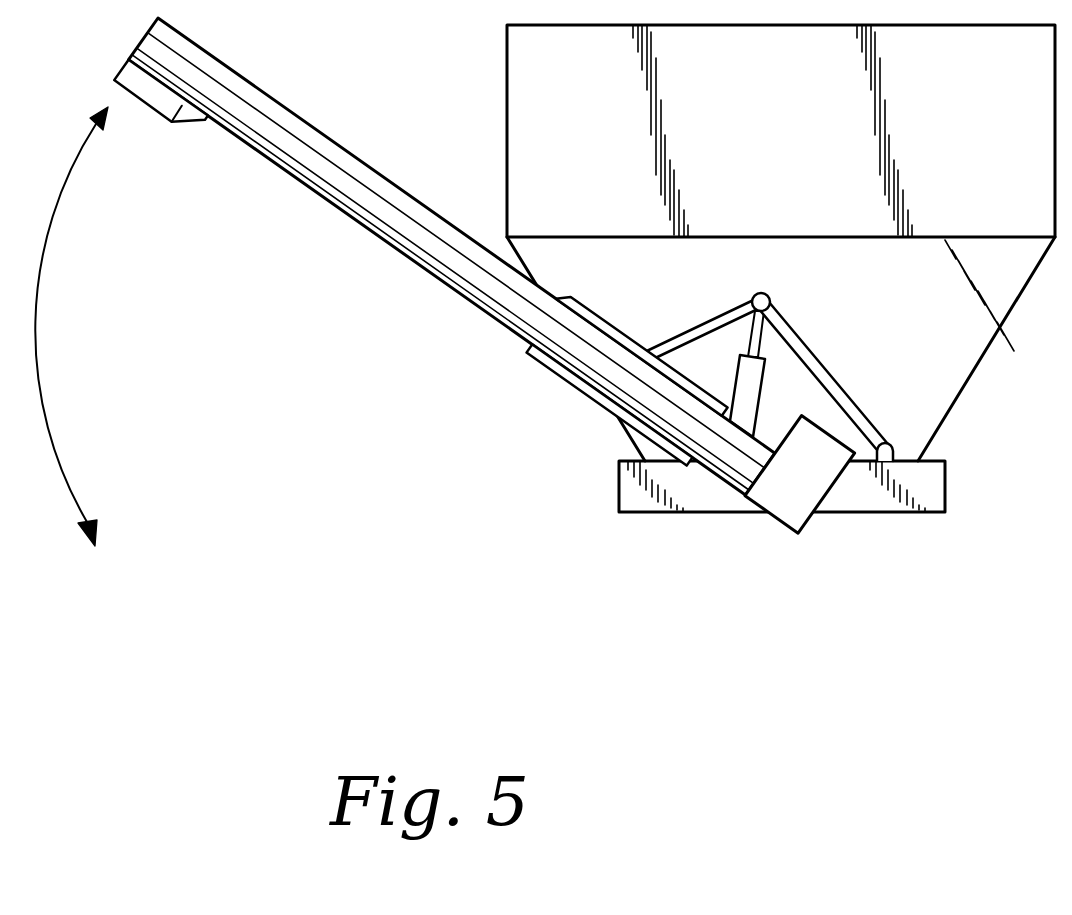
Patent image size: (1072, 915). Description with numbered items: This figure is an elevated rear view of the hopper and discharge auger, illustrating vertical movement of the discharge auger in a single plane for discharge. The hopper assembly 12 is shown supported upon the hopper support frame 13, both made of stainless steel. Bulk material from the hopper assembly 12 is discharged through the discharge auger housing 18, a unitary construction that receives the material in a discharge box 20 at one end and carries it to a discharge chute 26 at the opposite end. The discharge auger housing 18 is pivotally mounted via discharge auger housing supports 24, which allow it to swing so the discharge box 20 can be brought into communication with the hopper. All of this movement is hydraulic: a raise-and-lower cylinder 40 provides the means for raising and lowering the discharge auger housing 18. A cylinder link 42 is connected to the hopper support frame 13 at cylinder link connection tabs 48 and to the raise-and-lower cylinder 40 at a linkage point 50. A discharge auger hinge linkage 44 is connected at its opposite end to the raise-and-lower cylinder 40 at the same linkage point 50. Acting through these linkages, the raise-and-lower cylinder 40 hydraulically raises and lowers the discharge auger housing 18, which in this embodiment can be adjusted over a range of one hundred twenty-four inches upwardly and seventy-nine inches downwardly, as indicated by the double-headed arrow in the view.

The hopper assembly 12 is at (506, 82).
The hopper support frame 13 is at (947, 490).
The discharge auger housing 18 is at (390, 246).
The discharge box 20 is at (835, 498).
The discharge auger housing supports 24 is at (604, 318).
The discharge chute 26 is at (168, 124).
The raise-and-lower cylinder 40 is at (764, 398).
The cylinder link 42 is at (803, 338).
The discharge auger hinge linkage 44 is at (718, 313).
The cylinder link connection tabs 48 is at (891, 444).
The linkage point 50 is at (767, 294).